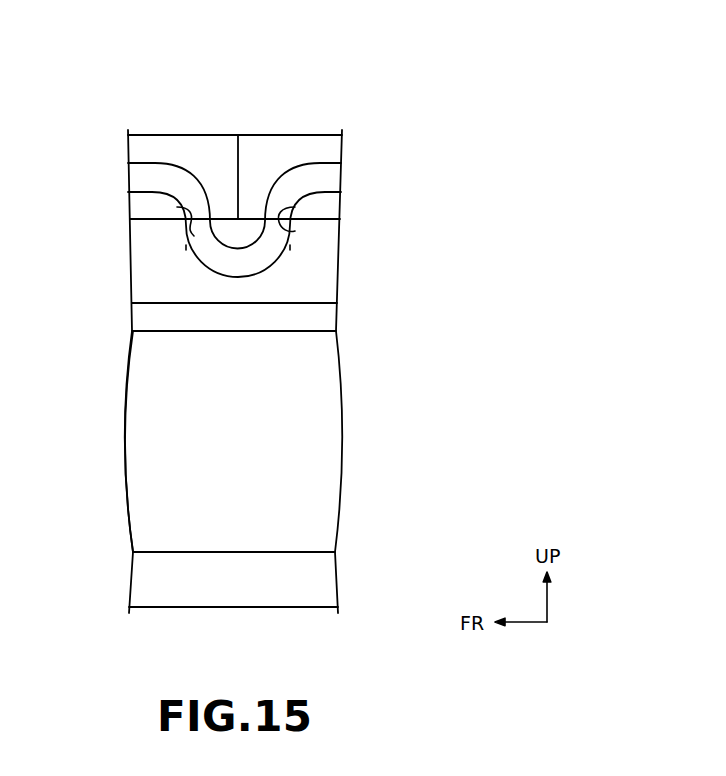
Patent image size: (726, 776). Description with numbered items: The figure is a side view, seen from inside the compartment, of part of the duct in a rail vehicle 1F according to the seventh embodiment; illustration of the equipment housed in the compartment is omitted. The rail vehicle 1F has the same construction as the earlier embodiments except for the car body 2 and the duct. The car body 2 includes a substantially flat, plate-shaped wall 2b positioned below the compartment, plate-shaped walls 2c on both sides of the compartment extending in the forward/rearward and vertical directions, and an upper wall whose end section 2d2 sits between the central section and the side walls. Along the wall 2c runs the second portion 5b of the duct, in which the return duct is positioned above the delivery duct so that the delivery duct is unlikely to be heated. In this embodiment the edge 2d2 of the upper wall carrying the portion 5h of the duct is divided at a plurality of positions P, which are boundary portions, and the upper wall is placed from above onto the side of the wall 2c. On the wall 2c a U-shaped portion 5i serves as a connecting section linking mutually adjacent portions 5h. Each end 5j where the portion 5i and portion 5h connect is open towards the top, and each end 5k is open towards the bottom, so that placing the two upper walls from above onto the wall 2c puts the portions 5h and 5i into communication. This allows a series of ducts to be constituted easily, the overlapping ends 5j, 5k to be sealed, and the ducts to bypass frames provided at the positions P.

The rail vehicle 1F is at (395, 45).
The car body 2 is at (329, 124).
The wall 2b is at (315, 552).
The wall 2c is at (325, 412).
The end section 2d2 is at (165, 146).
The portion 5h is at (146, 151).
The U-shaped portion 5i is at (177, 237).
The end 5j is at (177, 207).
The end 5k is at (193, 257).
The second portion 5b is at (305, 339).
The position P is at (238, 118).